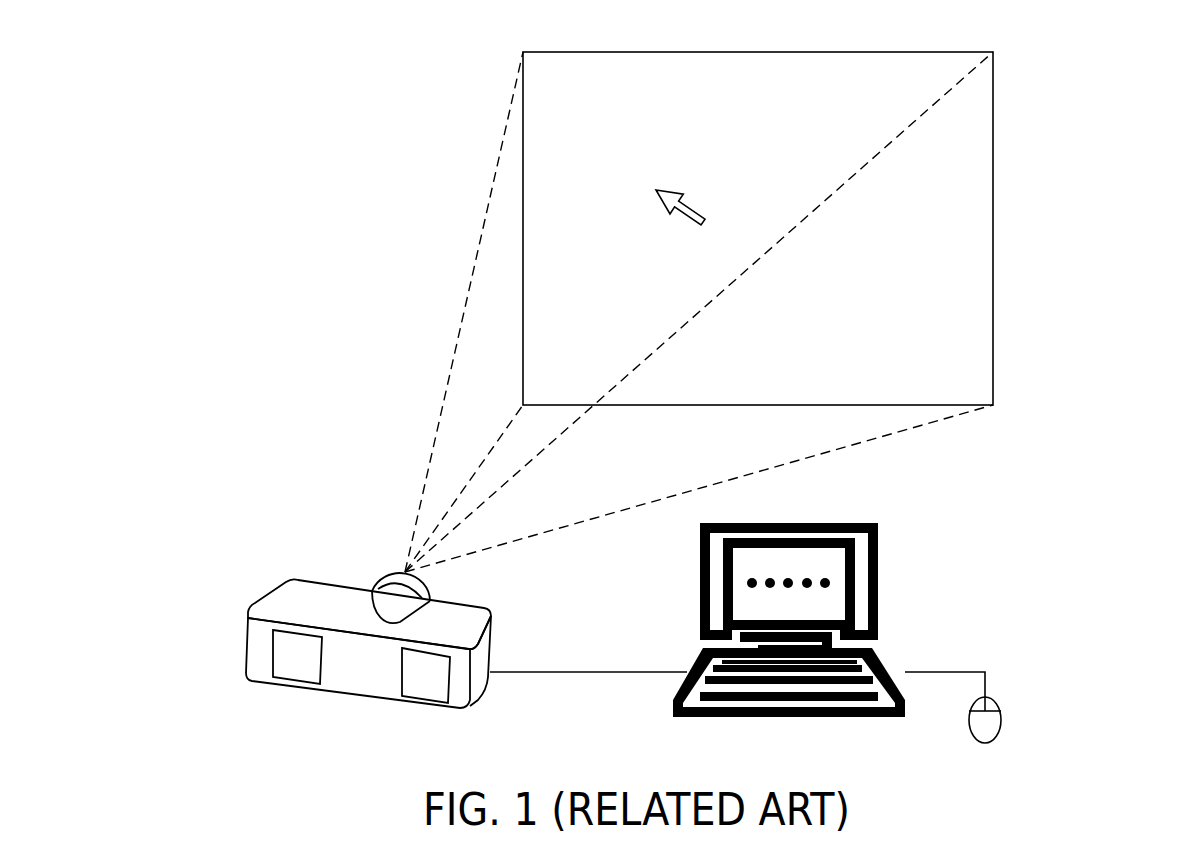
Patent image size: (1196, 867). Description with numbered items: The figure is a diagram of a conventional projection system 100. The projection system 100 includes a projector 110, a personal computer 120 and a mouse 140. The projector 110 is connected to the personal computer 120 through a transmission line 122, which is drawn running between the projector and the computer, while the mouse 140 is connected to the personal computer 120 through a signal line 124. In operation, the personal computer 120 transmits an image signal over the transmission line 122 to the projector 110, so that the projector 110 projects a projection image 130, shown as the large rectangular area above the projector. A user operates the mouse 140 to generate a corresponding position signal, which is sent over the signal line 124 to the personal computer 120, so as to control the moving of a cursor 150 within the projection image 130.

The projection system 100 is at (708, 404).
The projector 110 is at (365, 680).
The personal computer 120 is at (878, 597).
The transmission line 122 is at (547, 673).
The signal line 124 is at (962, 670).
The projection image 130 is at (995, 238).
The mouse 140 is at (1002, 727).
The cursor 150 is at (683, 218).